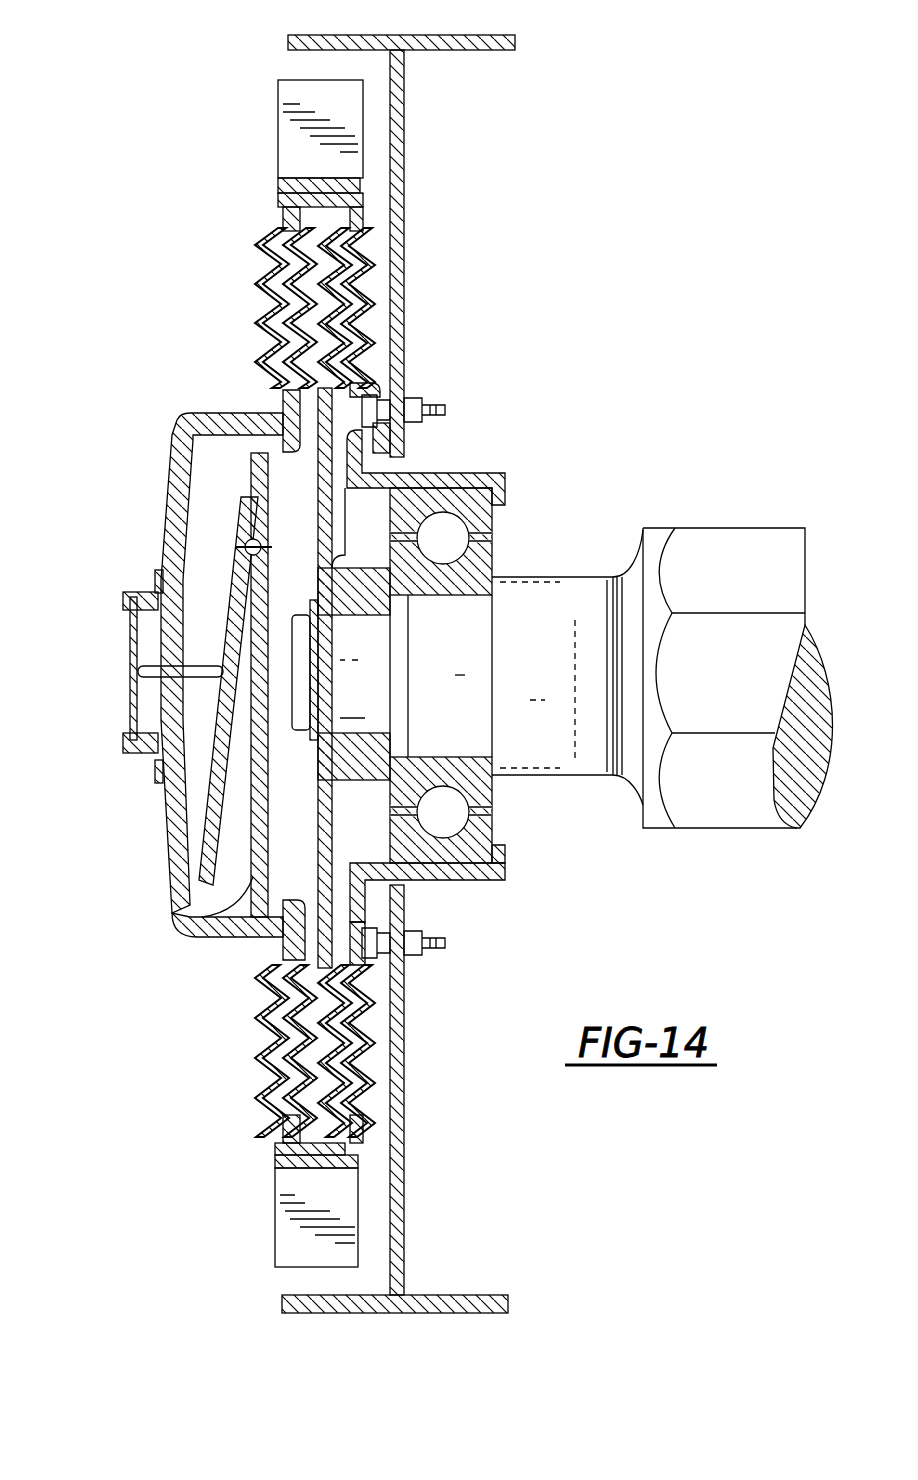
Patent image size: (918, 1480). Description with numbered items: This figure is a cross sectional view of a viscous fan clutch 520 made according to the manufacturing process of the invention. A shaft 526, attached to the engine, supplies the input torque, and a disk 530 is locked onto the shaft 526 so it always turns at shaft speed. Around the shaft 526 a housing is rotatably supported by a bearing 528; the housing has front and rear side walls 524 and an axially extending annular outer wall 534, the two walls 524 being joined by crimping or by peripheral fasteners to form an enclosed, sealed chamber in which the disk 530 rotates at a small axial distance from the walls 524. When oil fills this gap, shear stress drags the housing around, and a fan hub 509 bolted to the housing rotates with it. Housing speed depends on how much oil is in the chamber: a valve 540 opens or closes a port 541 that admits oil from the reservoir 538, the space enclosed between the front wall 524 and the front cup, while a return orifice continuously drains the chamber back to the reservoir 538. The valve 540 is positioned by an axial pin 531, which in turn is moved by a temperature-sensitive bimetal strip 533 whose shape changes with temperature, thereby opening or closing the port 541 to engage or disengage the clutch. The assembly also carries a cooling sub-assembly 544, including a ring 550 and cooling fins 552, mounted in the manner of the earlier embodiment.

The fan hub 509 is at (405, 232).
The valve actuator assembly 520 is at (572, 375).
The side walls 524 is at (265, 255).
The shaft 526 is at (550, 578).
The bearing 528 is at (490, 478).
The disk 530 is at (292, 442).
The axial pin 531 is at (205, 690).
The bimetal strip 533 is at (122, 640).
The annular outer wall 534 is at (315, 197).
The reservoir 538 is at (185, 412).
The valve 540 is at (200, 812).
The port 541 is at (196, 925).
The cooling sub-assembly 544 is at (272, 98).
The ring 550 is at (360, 185).
The magnet 552 is at (325, 90).